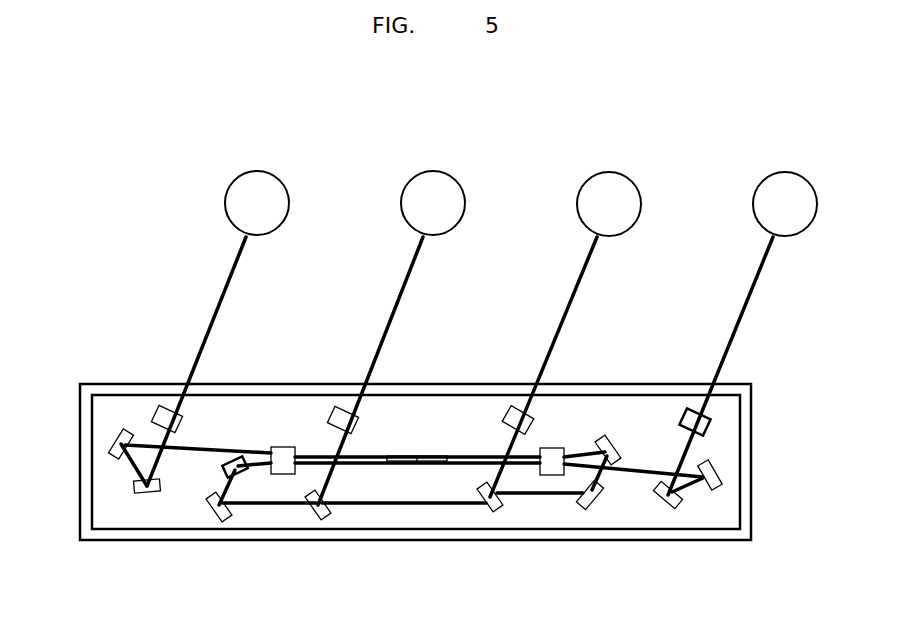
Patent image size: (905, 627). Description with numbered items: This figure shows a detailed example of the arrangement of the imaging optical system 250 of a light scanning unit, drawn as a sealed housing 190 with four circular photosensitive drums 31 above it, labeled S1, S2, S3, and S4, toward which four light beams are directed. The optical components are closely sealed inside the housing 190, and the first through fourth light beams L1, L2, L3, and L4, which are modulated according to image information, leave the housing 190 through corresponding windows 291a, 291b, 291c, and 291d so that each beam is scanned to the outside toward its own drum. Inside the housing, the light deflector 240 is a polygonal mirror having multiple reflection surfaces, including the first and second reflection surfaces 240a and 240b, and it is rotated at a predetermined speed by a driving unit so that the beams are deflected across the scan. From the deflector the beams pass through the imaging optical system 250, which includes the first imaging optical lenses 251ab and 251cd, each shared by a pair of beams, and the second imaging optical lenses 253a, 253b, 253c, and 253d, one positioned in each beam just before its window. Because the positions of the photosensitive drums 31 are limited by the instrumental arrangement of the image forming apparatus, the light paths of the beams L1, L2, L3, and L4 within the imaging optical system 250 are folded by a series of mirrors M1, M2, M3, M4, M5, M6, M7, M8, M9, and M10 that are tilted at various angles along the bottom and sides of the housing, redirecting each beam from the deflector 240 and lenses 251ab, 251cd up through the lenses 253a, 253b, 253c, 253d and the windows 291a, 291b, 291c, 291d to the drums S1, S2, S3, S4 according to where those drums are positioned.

The photosensitive drum 31 is at (292, 167).
The first light source S1 is at (265, 235).
The second light source S2 is at (441, 235).
The third light source S3 is at (617, 236).
The fourth light source S4 is at (793, 236).
The first light beam L1 is at (220, 300).
The second light beam L2 is at (397, 300).
The third light beam L3 is at (571, 300).
The fourth light beam L4 is at (746, 300).
The housing 190 is at (400, 541).
The imaging optical system 250 is at (277, 390).
The second imaging optical lens 253a is at (160, 407).
The second imaging optical lens 253b is at (342, 408).
The second imaging optical lens 253c is at (506, 421).
The second imaging optical lens 253d is at (690, 410).
The first imaging optical lens 251ab is at (280, 446).
The first imaging optical lens 251cd is at (560, 447).
The light deflector 240 is at (418, 460).
The first reflection surface 240a is at (382, 466).
The second reflection surface 240b is at (446, 466).
The window 291a is at (186, 395).
The window 291b is at (366, 400).
The window 291c is at (538, 383).
The window 291d is at (716, 396).
The mirror M1 is at (112, 452).
The mirror M2 is at (148, 496).
The mirror M3 is at (228, 466).
The mirror M4 is at (222, 517).
The mirror M5 is at (319, 516).
The mirror M6 is at (607, 438).
The seventh mirror M7 is at (591, 508).
The eighth mirror M8 is at (491, 510).
The ninth mirror M9 is at (714, 490).
The tenth mirror M10 is at (669, 508).